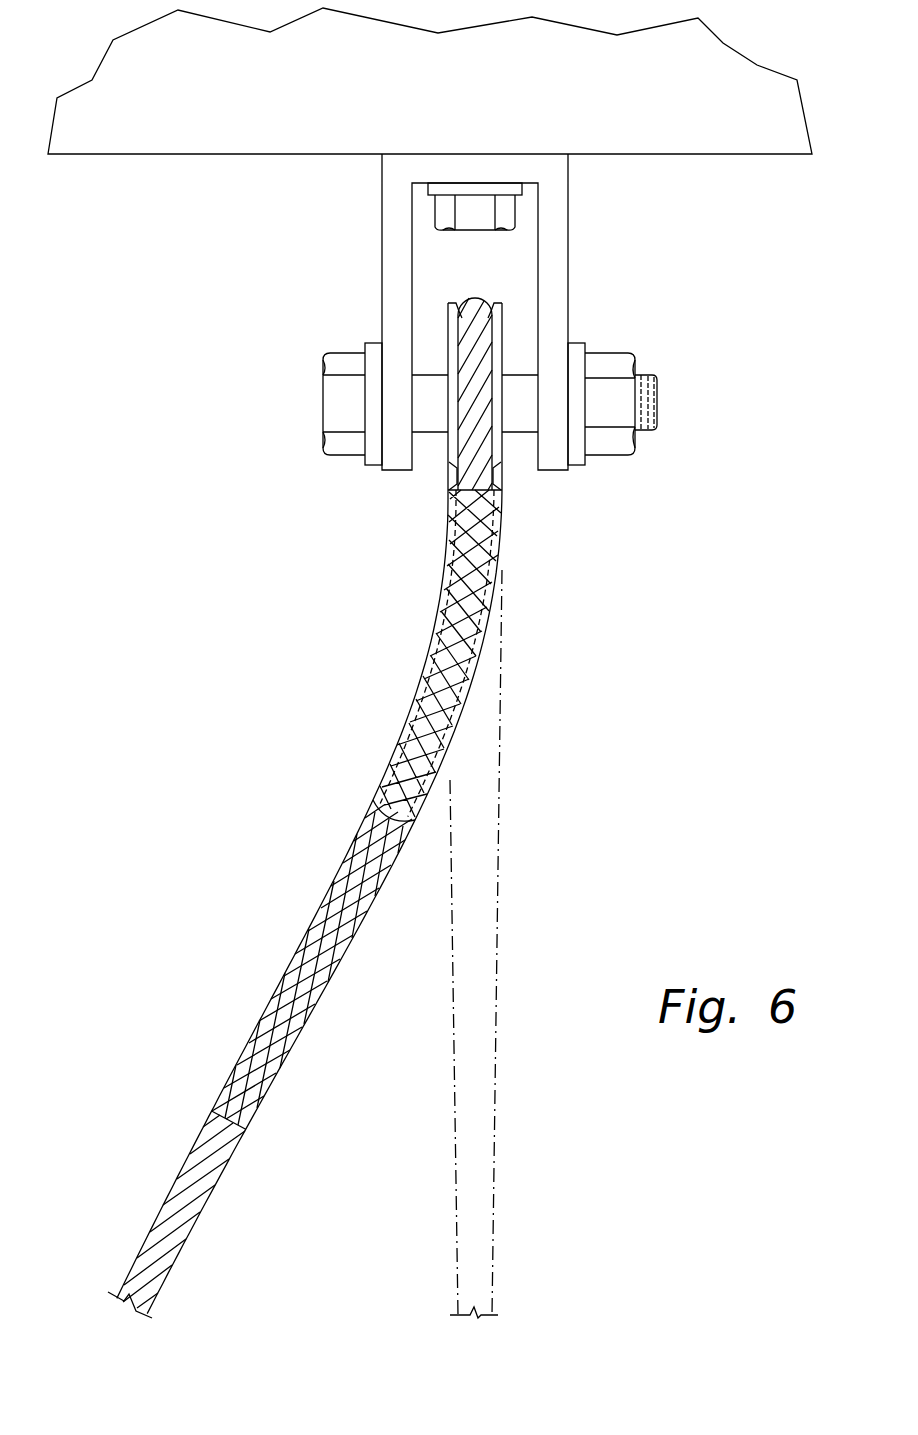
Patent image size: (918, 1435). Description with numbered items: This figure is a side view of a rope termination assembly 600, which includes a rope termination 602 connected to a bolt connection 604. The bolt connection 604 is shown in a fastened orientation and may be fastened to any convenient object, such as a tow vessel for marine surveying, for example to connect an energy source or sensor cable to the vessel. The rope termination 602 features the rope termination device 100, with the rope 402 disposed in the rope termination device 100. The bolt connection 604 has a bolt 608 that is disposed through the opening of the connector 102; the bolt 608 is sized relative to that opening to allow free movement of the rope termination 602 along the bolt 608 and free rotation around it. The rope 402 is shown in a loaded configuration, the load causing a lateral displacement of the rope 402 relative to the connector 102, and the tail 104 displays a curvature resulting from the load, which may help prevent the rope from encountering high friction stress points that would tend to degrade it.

The rope termination device 100 is at (450, 301).
The connector 102 is at (498, 301).
The tail 104 is at (437, 622).
The rope 402 is at (473, 347).
The rope termination assembly 600 is at (285, 519).
The rope termination 602 is at (513, 510).
The bolt connection 604 is at (569, 233).
The bolt 608 is at (657, 400).